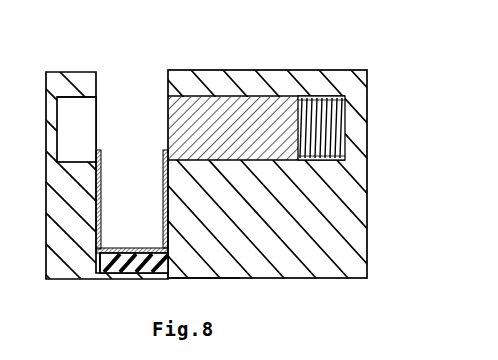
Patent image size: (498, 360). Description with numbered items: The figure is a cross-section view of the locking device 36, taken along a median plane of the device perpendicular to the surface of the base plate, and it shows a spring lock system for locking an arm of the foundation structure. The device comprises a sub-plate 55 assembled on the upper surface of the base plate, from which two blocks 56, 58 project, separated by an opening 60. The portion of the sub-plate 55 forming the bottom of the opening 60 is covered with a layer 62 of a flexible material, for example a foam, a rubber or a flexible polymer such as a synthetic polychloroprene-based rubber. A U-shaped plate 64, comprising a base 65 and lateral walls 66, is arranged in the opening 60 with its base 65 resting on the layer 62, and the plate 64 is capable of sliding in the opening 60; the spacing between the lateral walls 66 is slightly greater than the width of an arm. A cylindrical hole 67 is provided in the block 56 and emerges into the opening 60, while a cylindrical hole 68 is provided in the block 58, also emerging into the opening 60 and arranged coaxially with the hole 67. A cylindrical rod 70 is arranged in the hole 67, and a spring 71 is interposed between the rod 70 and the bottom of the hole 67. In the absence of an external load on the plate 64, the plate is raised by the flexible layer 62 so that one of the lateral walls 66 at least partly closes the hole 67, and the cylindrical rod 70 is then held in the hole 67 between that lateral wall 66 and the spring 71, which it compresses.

The locking device 36 is at (273, 30).
The sub-plate 55 is at (211, 278).
The block 56 is at (365, 213).
The block 58 is at (50, 228).
The opening 60 is at (128, 95).
The layer of flexible material 62 is at (118, 272).
The U-shaped plate 64 is at (95, 190).
The base 65 is at (100, 270).
The lateral walls 66 is at (170, 212).
The cylindrical hole 67 is at (212, 96).
The cylindrical hole 68 is at (83, 96).
The cylindrical rod 70 is at (247, 112).
The spring 71 is at (316, 96).